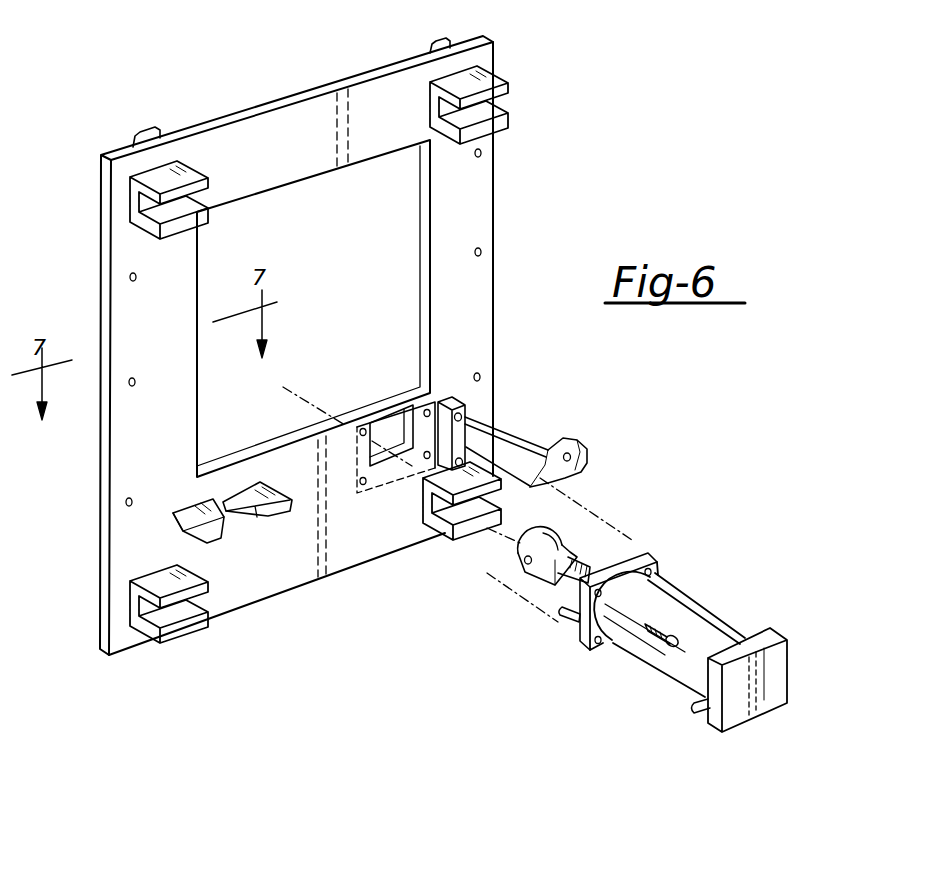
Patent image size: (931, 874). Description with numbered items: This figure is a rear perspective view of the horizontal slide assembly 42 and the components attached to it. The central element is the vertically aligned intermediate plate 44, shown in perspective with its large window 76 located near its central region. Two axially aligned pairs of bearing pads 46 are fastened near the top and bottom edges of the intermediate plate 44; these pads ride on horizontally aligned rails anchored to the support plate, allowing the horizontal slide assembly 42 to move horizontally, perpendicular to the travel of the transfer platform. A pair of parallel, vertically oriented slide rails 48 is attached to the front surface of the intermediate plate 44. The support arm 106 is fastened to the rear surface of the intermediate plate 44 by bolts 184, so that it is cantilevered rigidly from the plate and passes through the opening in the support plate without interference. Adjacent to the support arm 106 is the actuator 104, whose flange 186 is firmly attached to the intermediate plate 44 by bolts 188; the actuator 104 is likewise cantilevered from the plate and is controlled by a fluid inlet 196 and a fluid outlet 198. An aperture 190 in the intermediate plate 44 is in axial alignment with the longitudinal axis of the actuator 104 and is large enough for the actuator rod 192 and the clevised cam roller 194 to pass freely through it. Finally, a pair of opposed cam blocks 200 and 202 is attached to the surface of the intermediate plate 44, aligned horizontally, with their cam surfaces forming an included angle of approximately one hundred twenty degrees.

The horizontal slide assembly 42 is at (540, 227).
The intermediate plate 44 is at (494, 310).
The bearing pads 46 is at (130, 207).
The slide rails 48 is at (147, 132).
The window 76 is at (420, 247).
The actuator 104 is at (667, 673).
The support arm 106 is at (592, 480).
The bolts 184 is at (488, 415).
The flange 186 is at (658, 573).
The bolts 188 is at (643, 642).
The aperture 190 is at (390, 423).
The actuator rod 192 is at (588, 555).
The clevised cam roller 194 is at (518, 542).
The fluid inlet 196 is at (558, 622).
The fluid outlet 198 is at (693, 712).
The cam block 200 is at (294, 494).
The cam block 202 is at (177, 521).